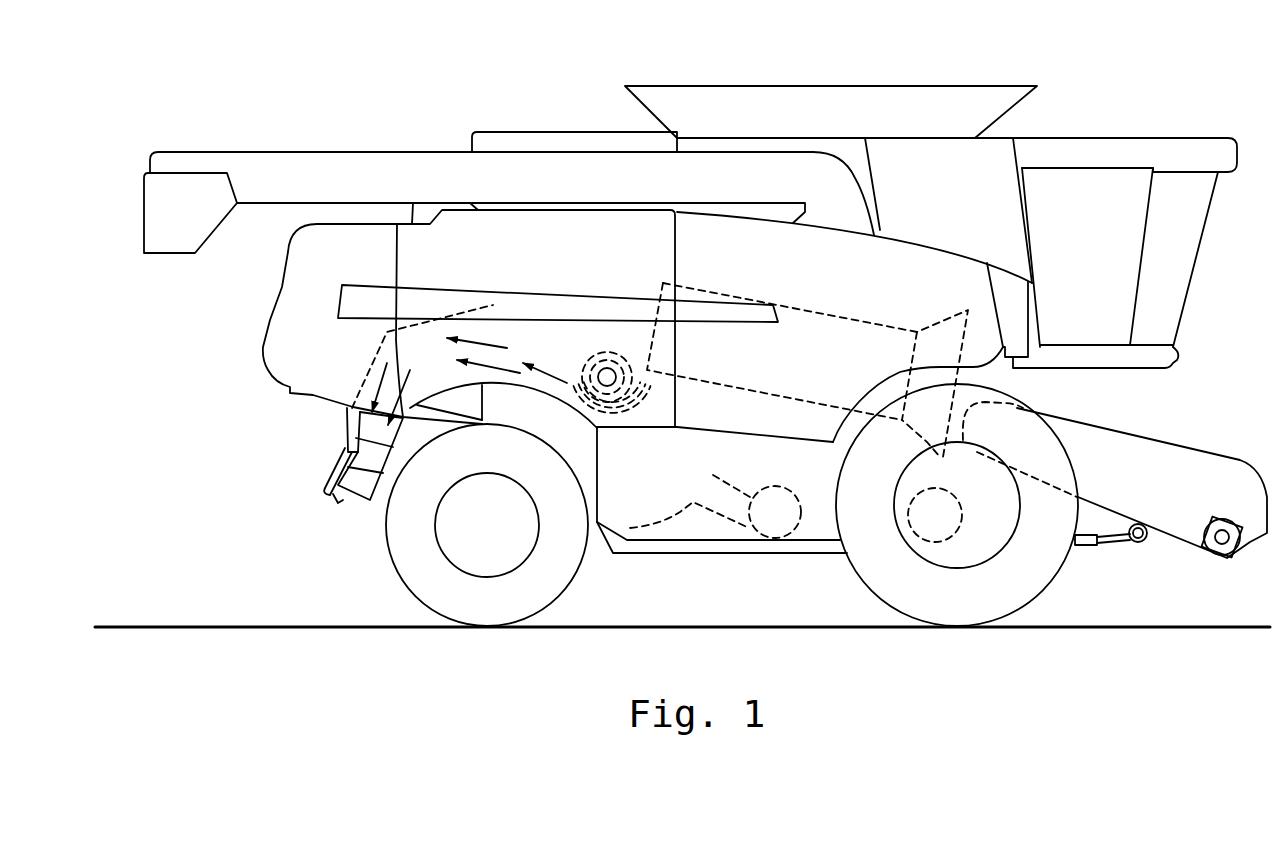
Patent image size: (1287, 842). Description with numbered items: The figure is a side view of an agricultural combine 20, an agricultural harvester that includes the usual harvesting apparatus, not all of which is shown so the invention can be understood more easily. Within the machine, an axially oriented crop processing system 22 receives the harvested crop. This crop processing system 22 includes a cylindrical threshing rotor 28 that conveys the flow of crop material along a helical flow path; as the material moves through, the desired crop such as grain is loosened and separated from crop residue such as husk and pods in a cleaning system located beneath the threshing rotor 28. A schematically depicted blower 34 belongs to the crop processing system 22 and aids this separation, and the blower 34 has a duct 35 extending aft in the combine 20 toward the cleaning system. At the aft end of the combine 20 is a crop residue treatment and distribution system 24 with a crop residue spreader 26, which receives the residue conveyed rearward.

The agricultural combine 20 is at (405, 140).
The crop processing system 22 is at (858, 320).
The crop residue treatment and distribution system 24 is at (592, 343).
The crop residue spreader 26 is at (350, 503).
The threshing rotor 28 is at (818, 408).
The blower 34 is at (795, 530).
The duct 35 is at (725, 505).